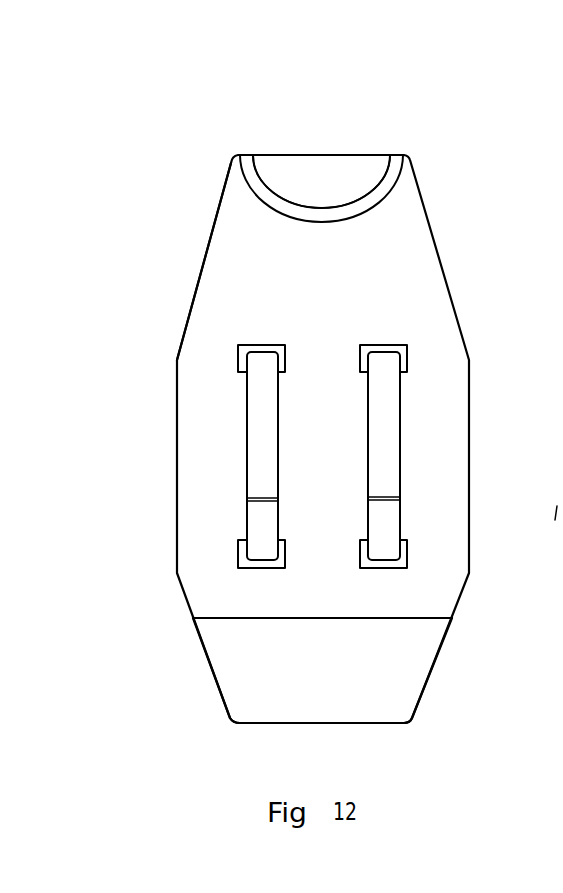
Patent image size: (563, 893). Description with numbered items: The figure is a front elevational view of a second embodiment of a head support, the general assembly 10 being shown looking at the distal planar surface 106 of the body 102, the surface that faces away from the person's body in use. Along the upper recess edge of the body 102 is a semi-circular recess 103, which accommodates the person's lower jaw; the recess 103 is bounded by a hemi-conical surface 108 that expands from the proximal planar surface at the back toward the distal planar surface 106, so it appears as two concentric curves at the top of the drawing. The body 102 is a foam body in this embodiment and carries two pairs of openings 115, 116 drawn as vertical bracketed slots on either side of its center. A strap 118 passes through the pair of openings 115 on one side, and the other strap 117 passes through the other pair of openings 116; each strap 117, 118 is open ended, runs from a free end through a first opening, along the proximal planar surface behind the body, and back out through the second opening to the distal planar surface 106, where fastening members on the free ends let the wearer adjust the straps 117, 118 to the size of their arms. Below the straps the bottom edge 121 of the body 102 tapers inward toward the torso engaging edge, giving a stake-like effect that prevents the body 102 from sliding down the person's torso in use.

The apparatus 10 is at (487, 120).
The body 102 is at (448, 278).
The recess 103 is at (305, 167).
The distal planar surface 106 is at (215, 272).
The hemi-conical surface 108 is at (420, 167).
The pair of openings 115 is at (402, 354).
The pair of openings 116 is at (240, 355).
The strap 117 is at (257, 440).
The strap 118 is at (388, 442).
The bottom edge 121 is at (410, 693).